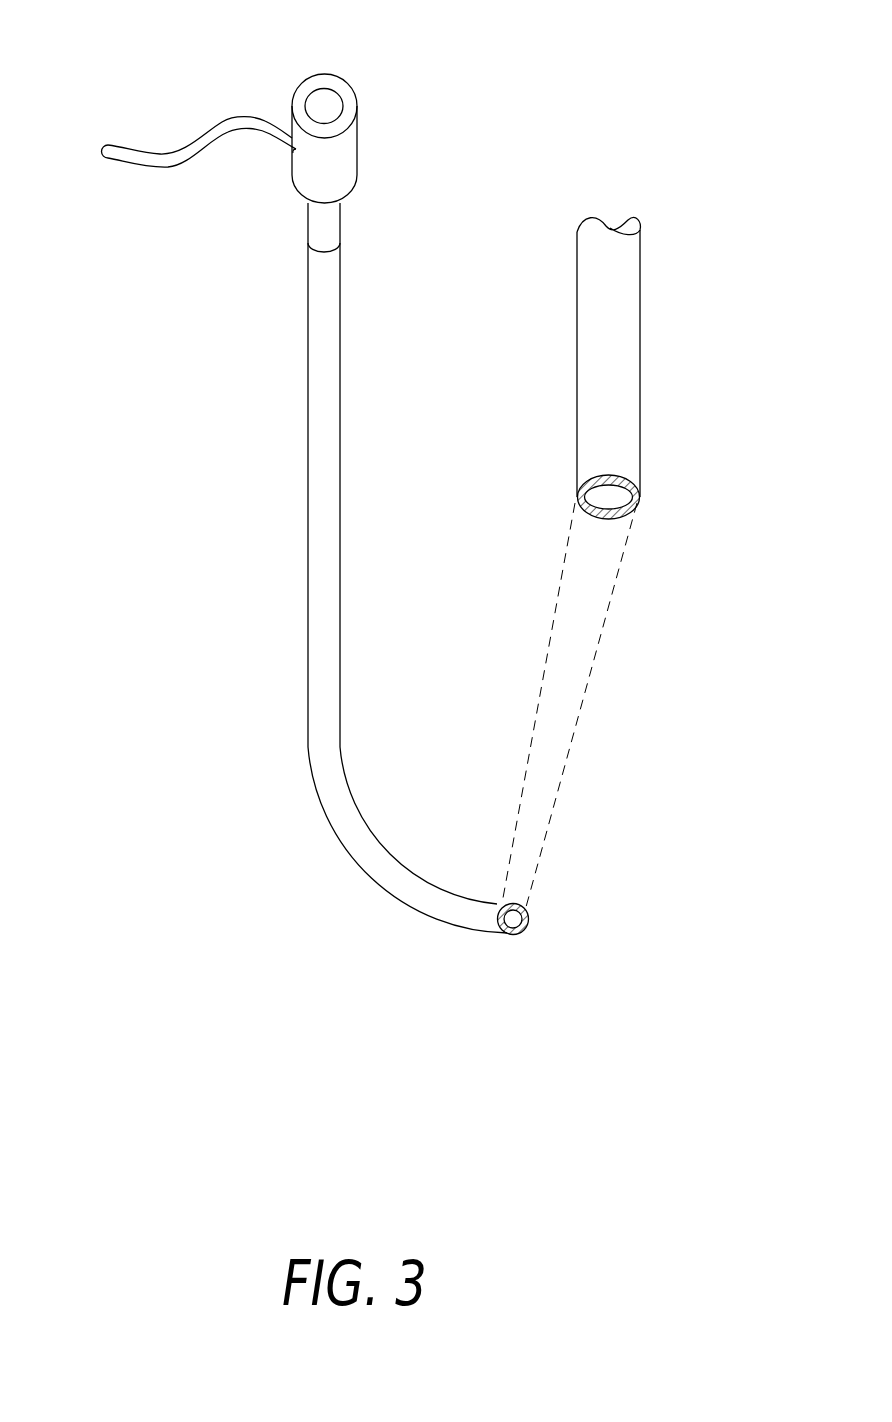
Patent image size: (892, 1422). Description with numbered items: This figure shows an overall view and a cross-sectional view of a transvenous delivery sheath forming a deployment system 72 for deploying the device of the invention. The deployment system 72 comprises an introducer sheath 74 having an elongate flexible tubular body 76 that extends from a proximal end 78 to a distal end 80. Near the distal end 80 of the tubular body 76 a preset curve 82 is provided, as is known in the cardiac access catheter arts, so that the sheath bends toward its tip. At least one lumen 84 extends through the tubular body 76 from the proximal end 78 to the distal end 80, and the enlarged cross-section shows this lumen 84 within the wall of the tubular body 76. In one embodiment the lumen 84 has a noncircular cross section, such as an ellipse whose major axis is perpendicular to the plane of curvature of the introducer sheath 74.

The deployment system 72 is at (218, 493).
The introducer sheath 74 is at (342, 228).
The elongate flexible tubular body 76 is at (315, 685).
The proximal end 78 is at (358, 127).
The distal end 80 is at (438, 907).
The preset curve 82 is at (275, 885).
The lumen 84 is at (325, 107).